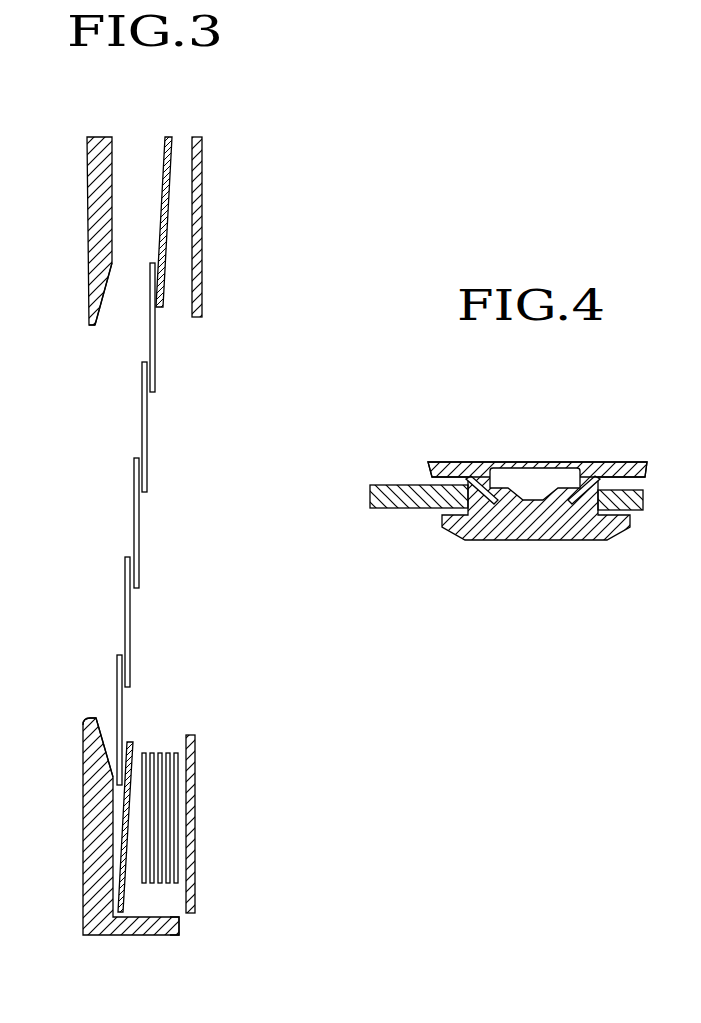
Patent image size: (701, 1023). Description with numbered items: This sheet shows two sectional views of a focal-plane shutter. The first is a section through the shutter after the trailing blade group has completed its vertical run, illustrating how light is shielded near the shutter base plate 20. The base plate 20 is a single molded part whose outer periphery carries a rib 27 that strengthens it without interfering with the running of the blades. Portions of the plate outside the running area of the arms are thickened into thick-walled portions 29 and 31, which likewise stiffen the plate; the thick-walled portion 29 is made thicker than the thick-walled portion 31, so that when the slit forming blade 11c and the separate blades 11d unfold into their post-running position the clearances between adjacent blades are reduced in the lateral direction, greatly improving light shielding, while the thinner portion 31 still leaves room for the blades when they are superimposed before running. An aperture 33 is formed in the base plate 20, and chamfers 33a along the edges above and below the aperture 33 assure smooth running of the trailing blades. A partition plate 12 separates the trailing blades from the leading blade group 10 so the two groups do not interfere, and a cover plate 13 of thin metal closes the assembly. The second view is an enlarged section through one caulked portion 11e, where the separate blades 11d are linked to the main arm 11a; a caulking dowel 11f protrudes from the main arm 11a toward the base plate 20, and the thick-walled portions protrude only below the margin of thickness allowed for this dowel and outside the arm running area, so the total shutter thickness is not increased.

In FIG. 3, the leading blade group 10 is at (180, 745).
In FIG. 4, the main arm 11a is at (413, 497).
In FIG. 3, the slit forming blade 11c is at (117, 693).
In FIG. 3, the separate blades 11d is at (113, 368).
In FIG. 4, the separate blades 11d is at (440, 470).
In FIG. 4, the caulked portion 11e is at (546, 482).
In FIG. 4, the caulking dowel 11f is at (568, 530).
In FIG. 3, the partition plate 12 is at (160, 205).
In FIG. 3, the cover plate 13 is at (198, 272).
In FIG. 3, the shutter base plate 20 is at (90, 905).
In FIG. 3, the rib 27 is at (178, 928).
In FIG. 3, the thick-walled portion 29 is at (112, 812).
In FIG. 3, the thick-walled portion 31 is at (100, 182).
In FIG. 3, the aperture 33 is at (88, 330).
In FIG. 3, the chamfers 33a is at (105, 297).